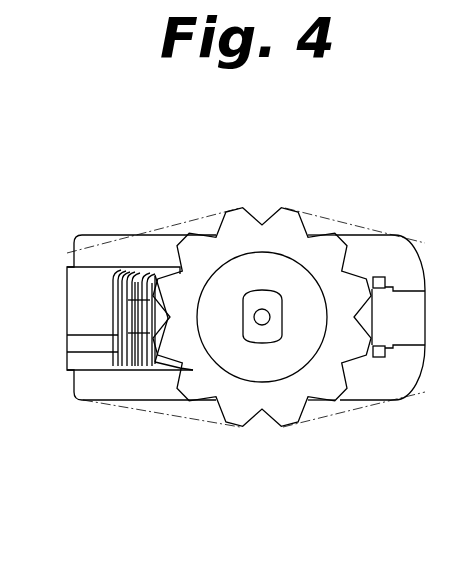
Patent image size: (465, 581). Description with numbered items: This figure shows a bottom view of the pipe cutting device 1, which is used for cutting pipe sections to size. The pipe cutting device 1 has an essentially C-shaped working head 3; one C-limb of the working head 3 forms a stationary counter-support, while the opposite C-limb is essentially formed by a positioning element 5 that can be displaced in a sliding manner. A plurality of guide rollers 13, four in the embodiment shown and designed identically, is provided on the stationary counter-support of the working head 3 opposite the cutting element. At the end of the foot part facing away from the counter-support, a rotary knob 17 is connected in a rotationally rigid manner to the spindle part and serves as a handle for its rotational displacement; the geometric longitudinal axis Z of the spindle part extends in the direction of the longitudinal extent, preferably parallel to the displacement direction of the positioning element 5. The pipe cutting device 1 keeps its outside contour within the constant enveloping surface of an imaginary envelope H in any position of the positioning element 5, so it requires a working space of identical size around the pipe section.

The pipe cutting device 1 is at (327, 196).
The working head 3 is at (377, 253).
The positioning element 5 is at (122, 362).
The guide rollers 13 is at (87, 302).
The rotary knob 17 is at (327, 382).
The geometric longitudinal axis Z is at (264, 323).
The imaginary envelope H is at (198, 418).